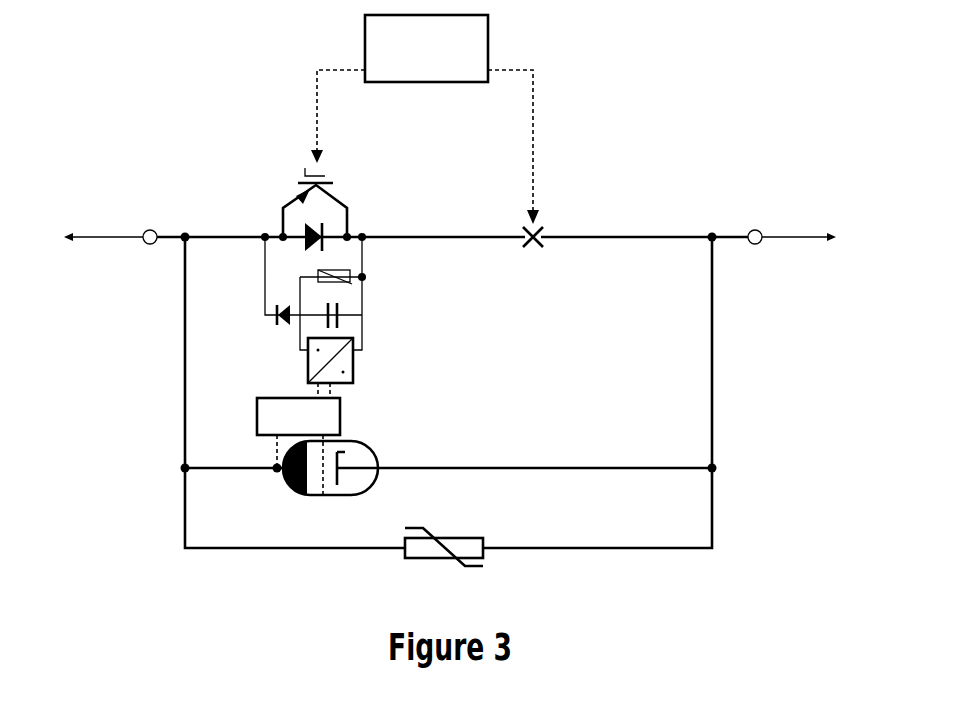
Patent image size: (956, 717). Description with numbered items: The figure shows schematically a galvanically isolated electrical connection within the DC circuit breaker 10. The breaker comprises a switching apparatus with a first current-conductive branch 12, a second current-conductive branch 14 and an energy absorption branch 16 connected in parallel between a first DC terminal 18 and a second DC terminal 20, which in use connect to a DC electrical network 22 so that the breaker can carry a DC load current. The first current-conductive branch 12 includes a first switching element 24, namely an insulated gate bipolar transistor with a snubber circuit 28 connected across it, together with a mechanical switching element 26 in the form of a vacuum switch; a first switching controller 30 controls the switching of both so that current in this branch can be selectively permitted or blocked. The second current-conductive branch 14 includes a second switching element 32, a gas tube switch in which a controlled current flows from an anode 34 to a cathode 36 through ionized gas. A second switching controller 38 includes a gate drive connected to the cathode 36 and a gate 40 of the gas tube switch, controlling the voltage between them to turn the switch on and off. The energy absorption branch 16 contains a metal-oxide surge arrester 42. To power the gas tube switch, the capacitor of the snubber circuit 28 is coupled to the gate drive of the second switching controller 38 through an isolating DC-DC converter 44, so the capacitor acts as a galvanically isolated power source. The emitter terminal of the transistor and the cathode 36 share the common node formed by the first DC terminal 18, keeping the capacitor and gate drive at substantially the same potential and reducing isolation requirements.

The DC circuit breaker 10 is at (231, 138).
The first current-conductive branch 12 is at (599, 249).
The second current-conductive branch 14 is at (611, 462).
The energy absorption branch 16 is at (618, 543).
The first DC terminal 18 is at (183, 232).
The second DC terminal 20 is at (710, 232).
The DC electrical network 22 is at (451, 237).
The first switching element 24 is at (333, 195).
The mechanical switching element 26 is at (557, 222).
The snubber circuit 28 is at (350, 300).
The first switching controller 30 is at (408, 66).
The second switching element 32 is at (370, 462).
The anode 34 is at (340, 480).
The cathode 36 is at (290, 490).
The second switching controller 38 is at (325, 413).
The gate 40 is at (318, 483).
The metal-oxide surge arrester 42 is at (470, 540).
The isolating DC-DC converter 44 is at (310, 362).